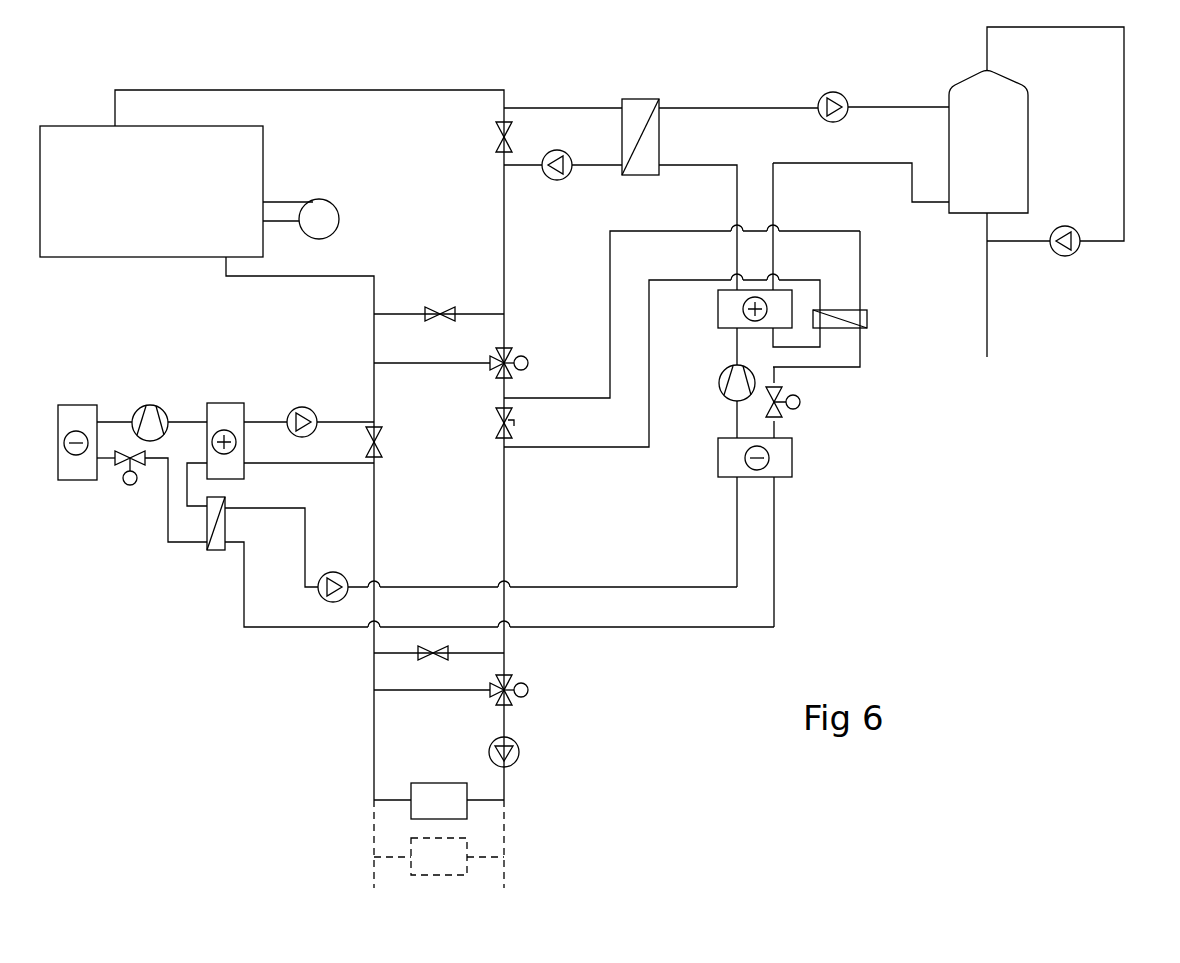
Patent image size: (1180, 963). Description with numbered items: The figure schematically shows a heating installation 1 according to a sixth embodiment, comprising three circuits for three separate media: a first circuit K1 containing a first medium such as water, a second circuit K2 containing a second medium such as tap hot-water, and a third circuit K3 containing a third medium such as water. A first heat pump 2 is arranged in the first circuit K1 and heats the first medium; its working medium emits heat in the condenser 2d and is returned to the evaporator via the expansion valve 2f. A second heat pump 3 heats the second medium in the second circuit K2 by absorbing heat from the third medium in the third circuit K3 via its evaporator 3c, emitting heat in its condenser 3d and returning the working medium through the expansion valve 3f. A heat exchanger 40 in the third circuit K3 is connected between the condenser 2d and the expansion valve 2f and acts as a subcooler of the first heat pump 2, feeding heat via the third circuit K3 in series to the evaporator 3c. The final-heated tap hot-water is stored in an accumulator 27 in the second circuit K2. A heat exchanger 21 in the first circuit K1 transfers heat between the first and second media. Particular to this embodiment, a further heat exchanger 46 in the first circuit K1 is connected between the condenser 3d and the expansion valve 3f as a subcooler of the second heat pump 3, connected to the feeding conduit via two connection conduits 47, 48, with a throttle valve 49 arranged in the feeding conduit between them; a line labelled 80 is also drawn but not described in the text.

The heating installation 1 is at (567, 655).
The first heat pump 2 is at (177, 391).
The condenser 2d is at (232, 408).
The expansion valve 2f is at (111, 469).
The second heat pump 3 is at (701, 412).
The evaporator 3c is at (796, 460).
The condenser 3d is at (715, 331).
The expansion valve 3f is at (782, 420).
The heat exchanger 21 is at (664, 150).
The accumulator 27 is at (1016, 150).
The first heat exchanger 40 is at (215, 552).
The further heat exchanger 46 is at (868, 322).
The connection conduit 47 is at (579, 398).
The connection conduit 48 is at (601, 455).
The throttle valve 49 is at (497, 428).
The supply line 80 is at (992, 324).
The first circuit K1 is at (392, 74).
The second circuit K2 is at (884, 93).
The third circuit K3 is at (636, 578).